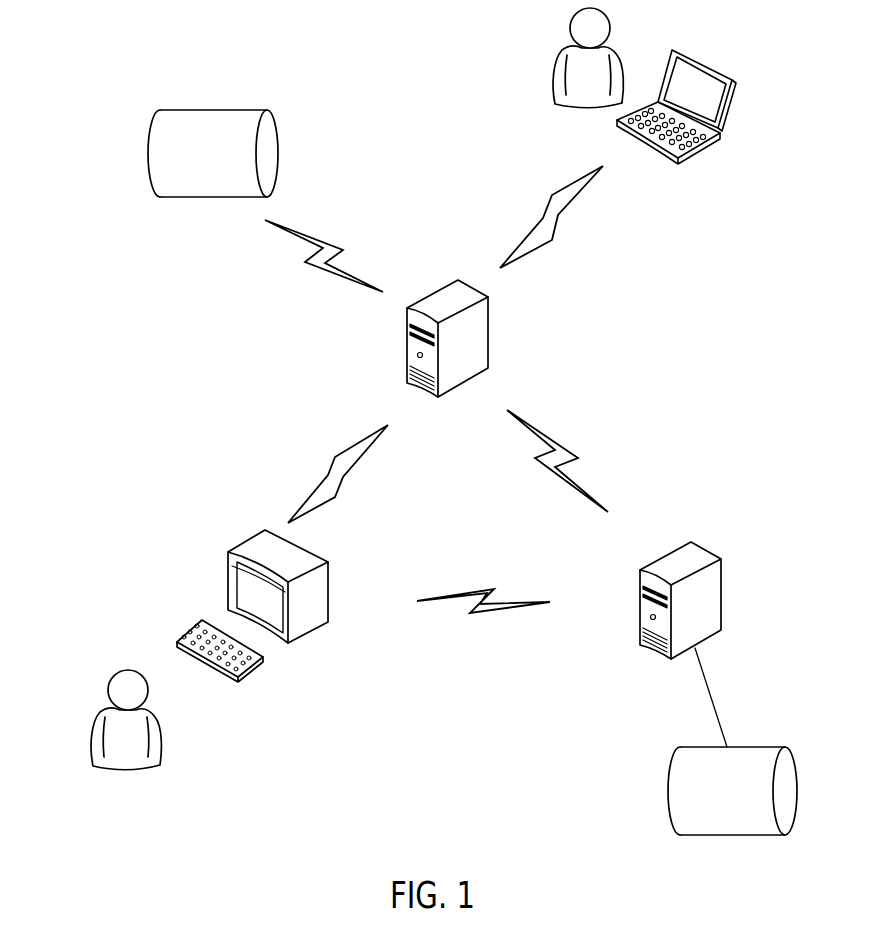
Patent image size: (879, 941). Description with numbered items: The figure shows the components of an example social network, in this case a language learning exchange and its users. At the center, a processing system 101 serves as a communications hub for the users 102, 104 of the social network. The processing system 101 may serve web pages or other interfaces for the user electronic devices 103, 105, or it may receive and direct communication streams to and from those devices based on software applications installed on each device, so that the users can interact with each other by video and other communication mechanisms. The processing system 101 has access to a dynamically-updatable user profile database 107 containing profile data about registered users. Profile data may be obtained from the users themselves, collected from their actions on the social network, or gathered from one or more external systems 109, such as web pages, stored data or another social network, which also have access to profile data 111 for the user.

The processing system 101 is at (488, 337).
The user 102 is at (555, 68).
The user electronic device 103 is at (721, 133).
The user 104 is at (95, 742).
The user electronic device 105 is at (295, 642).
The user profile database 107 is at (150, 163).
The external system 109 is at (638, 630).
The profile data 111 is at (672, 822).